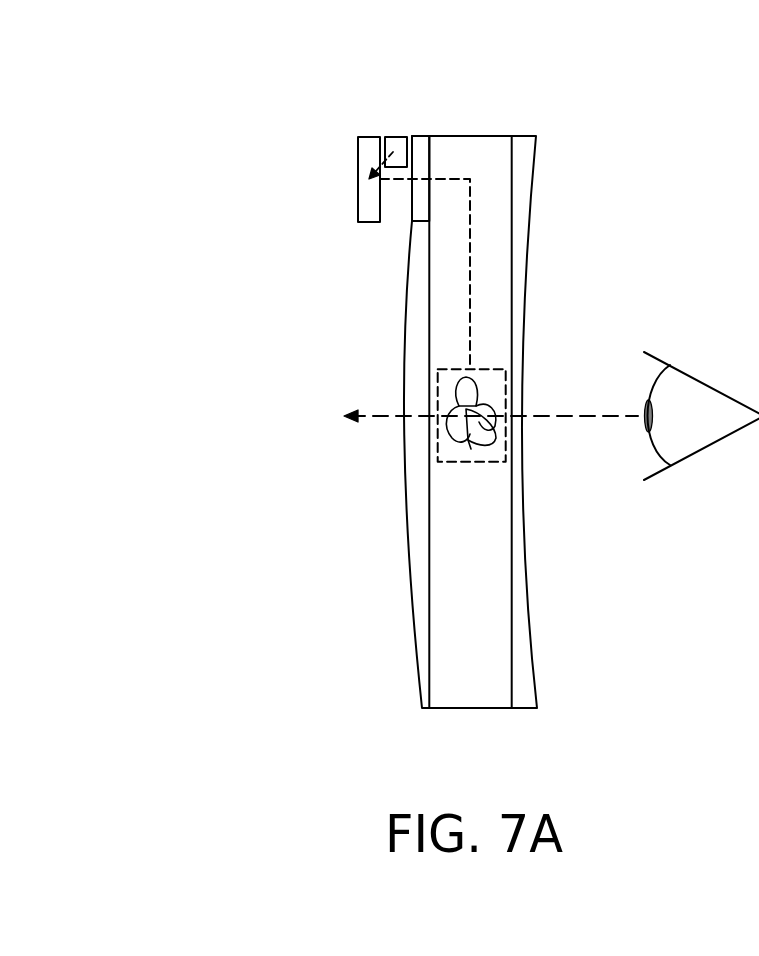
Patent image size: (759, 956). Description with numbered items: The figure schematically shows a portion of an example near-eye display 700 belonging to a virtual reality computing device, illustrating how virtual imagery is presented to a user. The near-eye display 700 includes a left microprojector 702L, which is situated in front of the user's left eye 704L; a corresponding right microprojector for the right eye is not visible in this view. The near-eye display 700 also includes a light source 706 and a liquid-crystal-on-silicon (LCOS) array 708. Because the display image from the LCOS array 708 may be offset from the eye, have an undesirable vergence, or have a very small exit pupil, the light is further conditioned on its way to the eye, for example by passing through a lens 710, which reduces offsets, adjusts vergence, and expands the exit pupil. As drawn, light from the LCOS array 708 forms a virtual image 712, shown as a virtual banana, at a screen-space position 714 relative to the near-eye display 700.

The near-eye display 700 is at (277, 86).
The left microprojector 702L is at (569, 197).
The left eye 704L is at (730, 424).
The light source 706 is at (397, 137).
The liquid-crystal-on-silicon (LCOS) array 708 is at (358, 180).
The lens 710 is at (424, 137).
The virtual image 712 is at (489, 373).
The screen-space position 714 is at (450, 368).